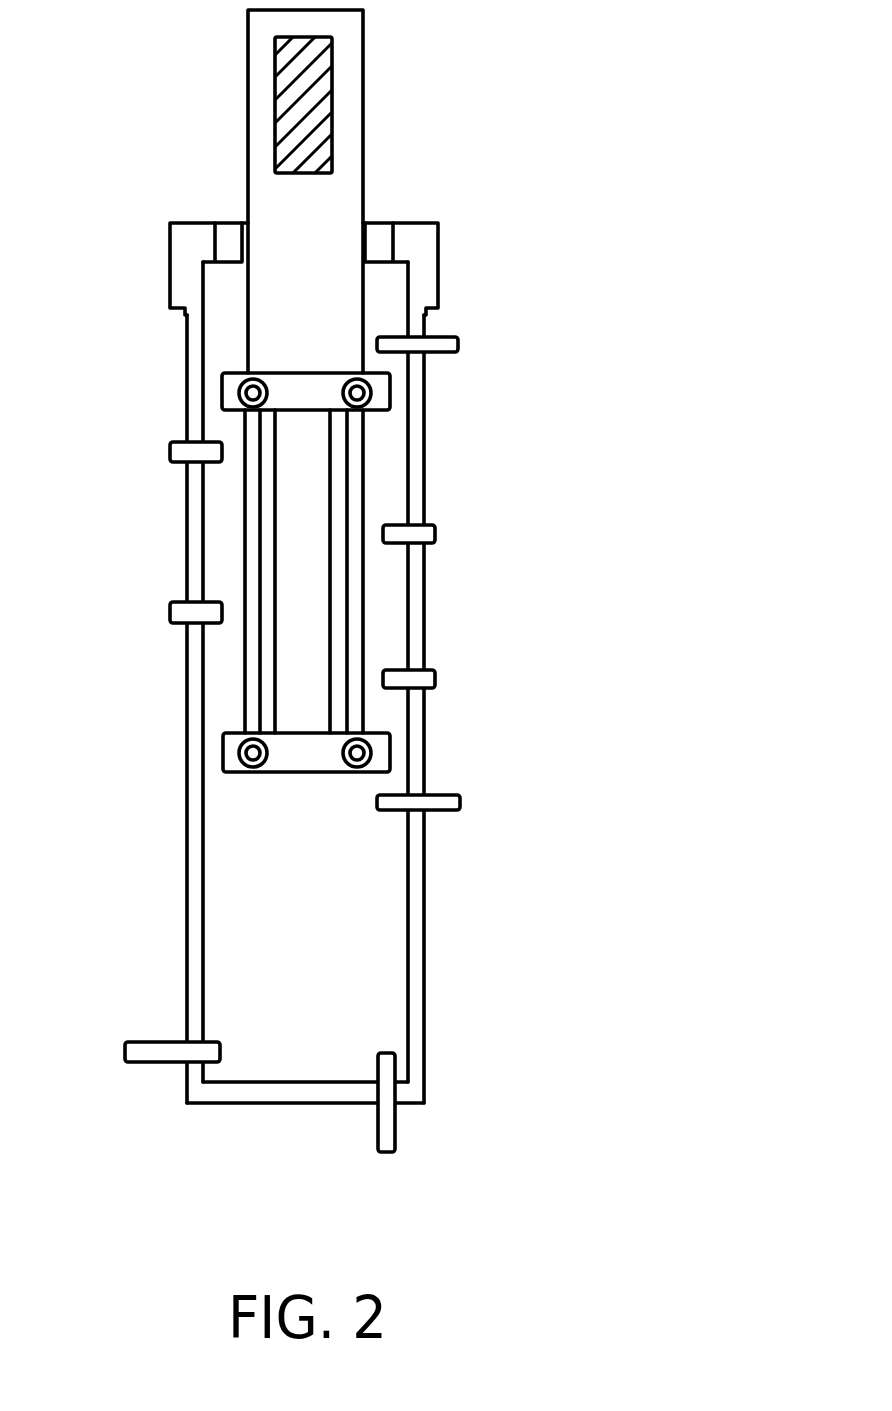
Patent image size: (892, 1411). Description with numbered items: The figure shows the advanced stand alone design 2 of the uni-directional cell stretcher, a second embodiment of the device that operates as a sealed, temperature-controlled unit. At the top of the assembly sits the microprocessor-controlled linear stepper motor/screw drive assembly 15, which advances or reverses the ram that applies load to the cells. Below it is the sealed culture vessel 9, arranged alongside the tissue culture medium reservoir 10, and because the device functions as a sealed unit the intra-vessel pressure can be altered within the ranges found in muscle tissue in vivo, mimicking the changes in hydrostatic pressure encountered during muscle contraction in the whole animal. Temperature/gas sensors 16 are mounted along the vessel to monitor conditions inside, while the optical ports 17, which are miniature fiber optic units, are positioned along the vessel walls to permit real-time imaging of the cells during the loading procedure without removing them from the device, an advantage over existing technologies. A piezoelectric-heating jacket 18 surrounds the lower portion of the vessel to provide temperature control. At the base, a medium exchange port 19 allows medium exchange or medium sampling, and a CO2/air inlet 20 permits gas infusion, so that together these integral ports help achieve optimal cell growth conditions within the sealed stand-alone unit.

The advanced stand alone design 2 is at (562, 245).
The sealed culture vessel 9 is at (420, 873).
The tissue culture medium reservoir 10 is at (223, 830).
The stepper motor/screw drive assembly 15 is at (312, 107).
The temperature/gas sensors 16 is at (458, 344).
The optical ports 17 is at (168, 455).
The piezoelectric-heating jacket 18 is at (412, 988).
The medium exchange port 19 is at (153, 1062).
The CO2/air inlet 20 is at (395, 1127).